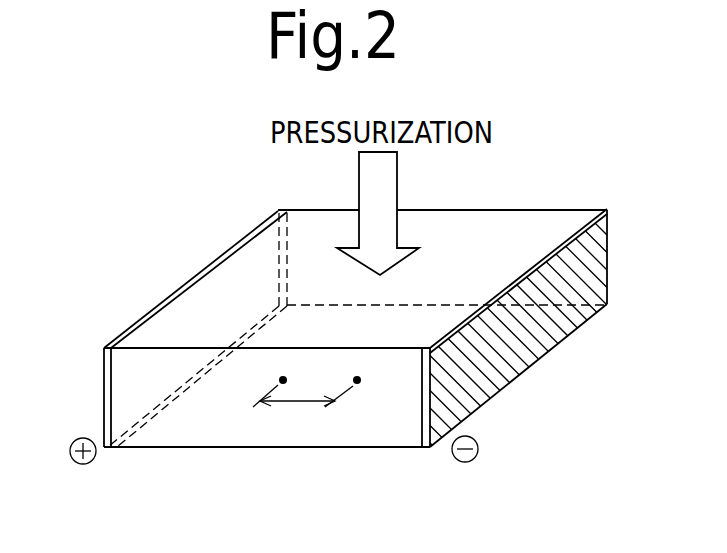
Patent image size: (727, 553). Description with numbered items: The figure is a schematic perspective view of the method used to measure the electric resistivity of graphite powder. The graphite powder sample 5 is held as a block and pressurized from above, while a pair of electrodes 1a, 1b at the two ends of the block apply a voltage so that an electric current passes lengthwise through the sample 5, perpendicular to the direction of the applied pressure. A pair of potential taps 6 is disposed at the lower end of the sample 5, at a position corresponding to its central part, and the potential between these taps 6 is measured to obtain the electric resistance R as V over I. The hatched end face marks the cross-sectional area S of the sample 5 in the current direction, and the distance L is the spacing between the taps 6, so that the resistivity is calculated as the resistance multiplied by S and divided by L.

The electrode 1a is at (138, 322).
The electrode 1b is at (494, 364).
The sample 5 is at (492, 250).
The potential tap 6 is at (280, 378).
The distance between the taps L is at (303, 388).
The cross-sectional area S is at (522, 342).